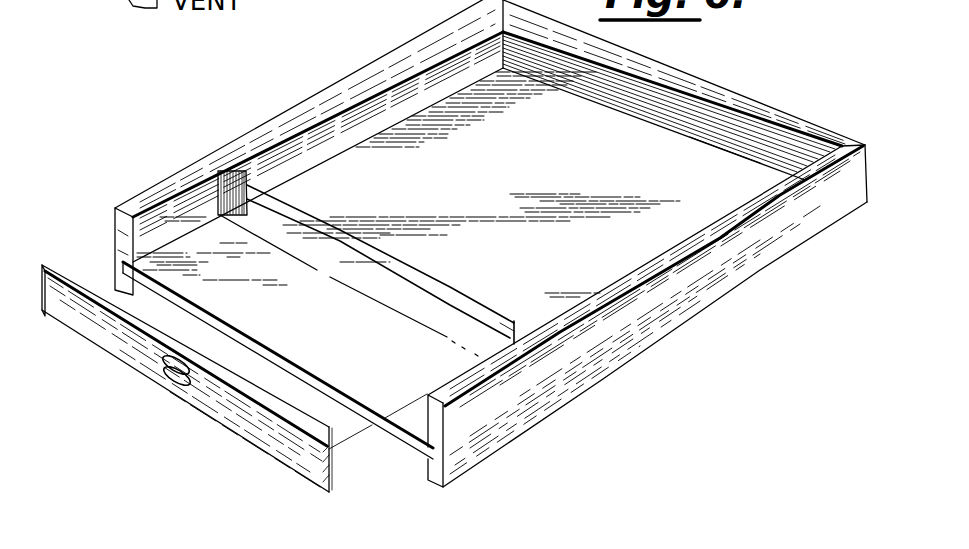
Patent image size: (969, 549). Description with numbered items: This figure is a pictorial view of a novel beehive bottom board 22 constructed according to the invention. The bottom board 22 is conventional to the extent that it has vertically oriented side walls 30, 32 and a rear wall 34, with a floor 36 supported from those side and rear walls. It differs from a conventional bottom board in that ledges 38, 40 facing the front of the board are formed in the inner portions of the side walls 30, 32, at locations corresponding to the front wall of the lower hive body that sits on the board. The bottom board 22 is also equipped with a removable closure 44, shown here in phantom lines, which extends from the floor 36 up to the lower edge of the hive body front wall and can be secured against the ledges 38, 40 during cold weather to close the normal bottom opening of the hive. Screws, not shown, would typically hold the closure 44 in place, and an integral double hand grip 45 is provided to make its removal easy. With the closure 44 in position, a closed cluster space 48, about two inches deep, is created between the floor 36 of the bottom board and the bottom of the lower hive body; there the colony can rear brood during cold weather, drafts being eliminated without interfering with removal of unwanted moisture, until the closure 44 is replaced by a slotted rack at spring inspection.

The bottom board 22 is at (412, 34).
The side wall 30 is at (339, 84).
The side wall 32 is at (699, 308).
The rear wall 34 is at (712, 89).
The floor 36 is at (330, 342).
The ledge 38 is at (218, 195).
The ledge 40 is at (513, 330).
The removable closure 44 is at (415, 272).
The double hand grip 45 is at (170, 386).
The cluster space 48 is at (718, 163).